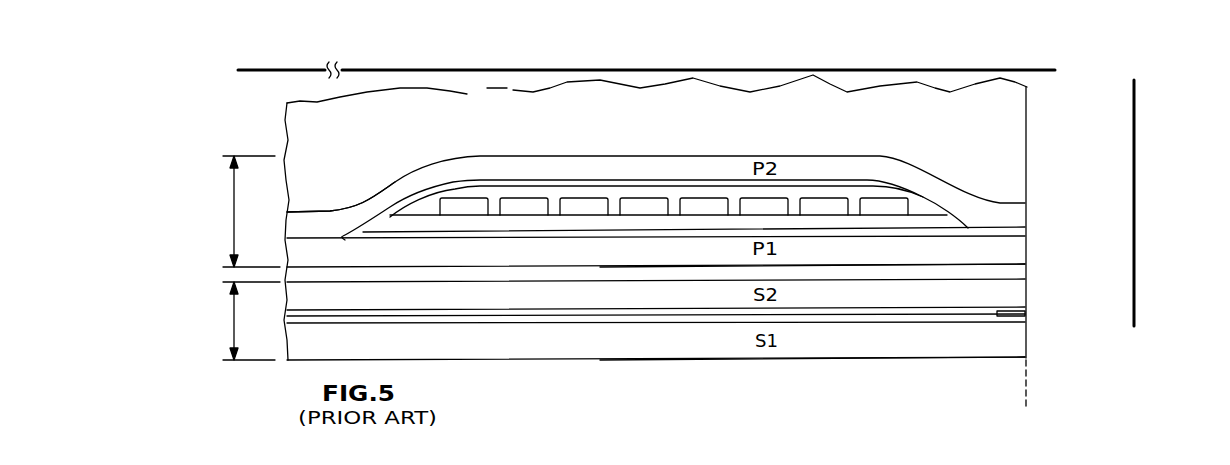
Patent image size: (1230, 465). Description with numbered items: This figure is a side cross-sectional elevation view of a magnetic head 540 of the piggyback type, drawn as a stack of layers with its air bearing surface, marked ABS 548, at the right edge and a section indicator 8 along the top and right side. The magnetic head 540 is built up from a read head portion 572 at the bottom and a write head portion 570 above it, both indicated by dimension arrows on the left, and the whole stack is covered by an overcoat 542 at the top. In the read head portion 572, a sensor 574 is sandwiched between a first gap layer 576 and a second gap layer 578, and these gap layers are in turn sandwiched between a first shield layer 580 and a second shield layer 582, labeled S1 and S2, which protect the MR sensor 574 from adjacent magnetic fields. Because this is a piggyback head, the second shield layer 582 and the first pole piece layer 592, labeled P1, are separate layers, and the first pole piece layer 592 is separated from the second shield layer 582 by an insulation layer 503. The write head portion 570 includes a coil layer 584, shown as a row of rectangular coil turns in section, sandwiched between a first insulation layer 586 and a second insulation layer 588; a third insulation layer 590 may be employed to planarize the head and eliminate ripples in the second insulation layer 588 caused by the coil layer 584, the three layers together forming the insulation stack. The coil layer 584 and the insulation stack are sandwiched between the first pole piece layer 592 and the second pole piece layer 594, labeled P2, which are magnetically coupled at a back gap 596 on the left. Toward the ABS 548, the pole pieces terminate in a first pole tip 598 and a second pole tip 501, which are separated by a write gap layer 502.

The section line 8- 8 is at (243, 70).
The magnetic head 540 is at (268, 115).
The overcoat layer 542 is at (1010, 113).
The air bearing surface (ABS) 548 is at (1026, 402).
The write head portion 570 is at (232, 216).
The read head portion 572 is at (232, 323).
The sensor 574 is at (1026, 316).
The first gap layer 576 is at (717, 322).
The second gap layer 578 is at (687, 307).
The first shield layer 580 is at (832, 345).
The second shield layer 582 is at (892, 295).
The coil layer 584 is at (695, 203).
The first insulation layer 586 is at (615, 222).
The second insulation layer 588 is at (922, 205).
The third insulation layer 590 is at (497, 181).
The first pole piece layer 592 is at (950, 257).
The second pole piece layer 594 is at (823, 157).
The back gap 596 is at (318, 210).
The first pole tip 598 is at (1026, 254).
The second pole tip 501 is at (1018, 213).
The write gap layer 502 is at (1026, 231).
The insulation layer 503 is at (553, 275).